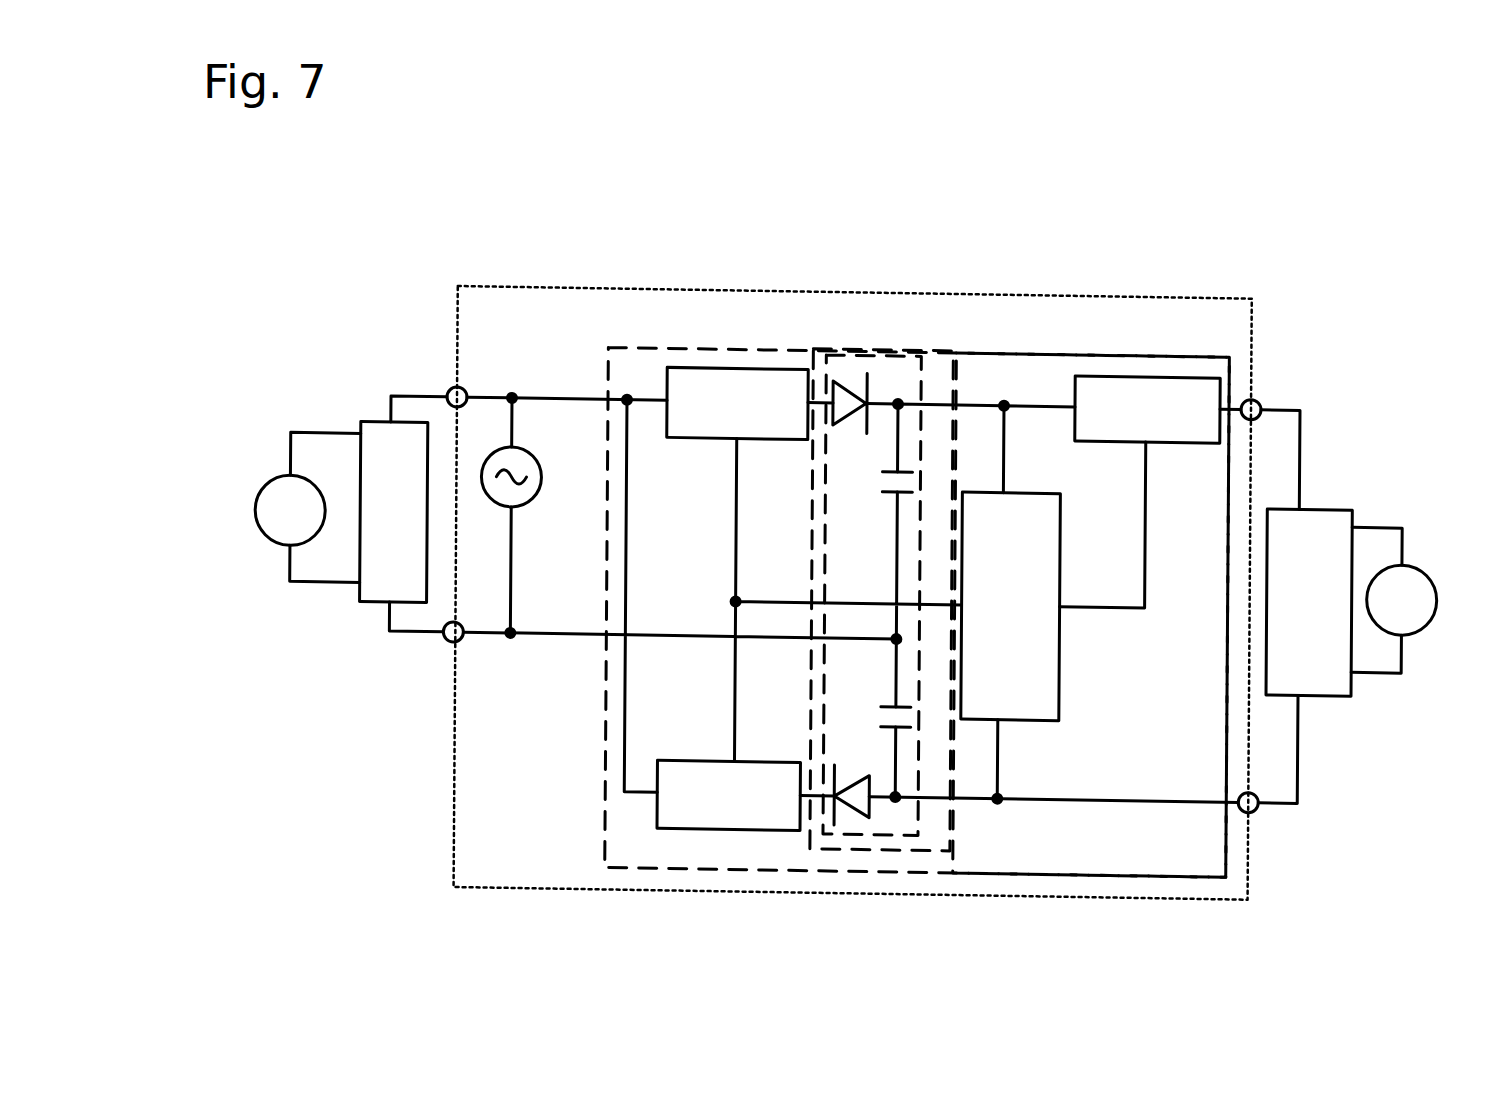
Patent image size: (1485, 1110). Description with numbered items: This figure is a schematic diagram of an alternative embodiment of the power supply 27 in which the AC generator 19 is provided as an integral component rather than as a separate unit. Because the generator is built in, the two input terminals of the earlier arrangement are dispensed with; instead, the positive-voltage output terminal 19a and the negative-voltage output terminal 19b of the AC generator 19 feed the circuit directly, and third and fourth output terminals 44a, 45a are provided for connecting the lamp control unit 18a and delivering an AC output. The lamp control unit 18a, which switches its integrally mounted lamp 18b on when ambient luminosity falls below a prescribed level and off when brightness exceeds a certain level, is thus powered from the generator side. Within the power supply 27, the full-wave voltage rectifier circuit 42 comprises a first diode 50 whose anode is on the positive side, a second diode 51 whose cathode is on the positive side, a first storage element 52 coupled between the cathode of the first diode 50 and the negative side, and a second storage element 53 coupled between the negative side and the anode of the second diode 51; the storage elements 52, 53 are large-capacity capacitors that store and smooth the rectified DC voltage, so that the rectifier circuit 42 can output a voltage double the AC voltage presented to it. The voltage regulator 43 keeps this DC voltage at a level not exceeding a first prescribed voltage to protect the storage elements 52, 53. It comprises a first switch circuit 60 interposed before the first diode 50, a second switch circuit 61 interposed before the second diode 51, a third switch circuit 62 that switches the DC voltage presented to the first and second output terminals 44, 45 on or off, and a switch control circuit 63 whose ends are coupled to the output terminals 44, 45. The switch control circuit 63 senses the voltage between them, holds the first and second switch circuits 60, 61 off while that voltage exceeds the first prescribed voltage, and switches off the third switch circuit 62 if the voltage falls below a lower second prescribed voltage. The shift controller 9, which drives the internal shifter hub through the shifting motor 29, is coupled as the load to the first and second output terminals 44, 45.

The power supply 27 is at (818, 286).
The third output terminal 44a is at (448, 388).
The fourth output terminal 45a is at (452, 642).
The first output terminal 44 is at (1254, 386).
The second output terminal 45 is at (1256, 795).
The AC generator 19 is at (542, 477).
The positive-voltage output terminal 19a is at (512, 445).
The negative-voltage output terminal 19b is at (512, 510).
The lamp control unit 18a is at (370, 605).
The lamp 18b is at (268, 540).
The first switch circuit 60 is at (703, 430).
The second switch circuit 61 is at (699, 757).
The third switch circuit 62 is at (1183, 433).
The switch control circuit 63 is at (1064, 537).
The full-wave voltage rectifier circuit 42 is at (848, 343).
The voltage regulator 43 is at (1060, 342).
The first diode 50 is at (848, 411).
The second diode 51 is at (874, 771).
The first storage element 52 is at (893, 486).
The second storage element 53 is at (895, 700).
The shift controller 9 is at (1311, 496).
The shifting motor 29 is at (1411, 551).